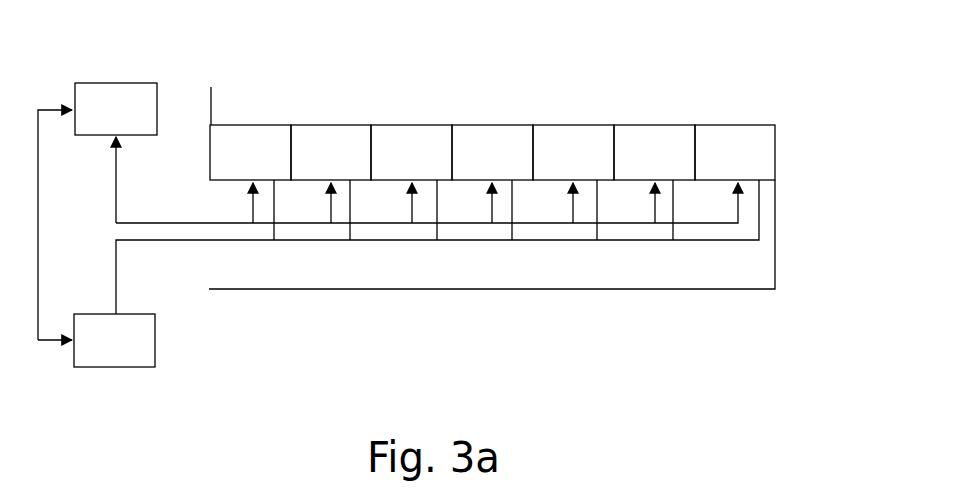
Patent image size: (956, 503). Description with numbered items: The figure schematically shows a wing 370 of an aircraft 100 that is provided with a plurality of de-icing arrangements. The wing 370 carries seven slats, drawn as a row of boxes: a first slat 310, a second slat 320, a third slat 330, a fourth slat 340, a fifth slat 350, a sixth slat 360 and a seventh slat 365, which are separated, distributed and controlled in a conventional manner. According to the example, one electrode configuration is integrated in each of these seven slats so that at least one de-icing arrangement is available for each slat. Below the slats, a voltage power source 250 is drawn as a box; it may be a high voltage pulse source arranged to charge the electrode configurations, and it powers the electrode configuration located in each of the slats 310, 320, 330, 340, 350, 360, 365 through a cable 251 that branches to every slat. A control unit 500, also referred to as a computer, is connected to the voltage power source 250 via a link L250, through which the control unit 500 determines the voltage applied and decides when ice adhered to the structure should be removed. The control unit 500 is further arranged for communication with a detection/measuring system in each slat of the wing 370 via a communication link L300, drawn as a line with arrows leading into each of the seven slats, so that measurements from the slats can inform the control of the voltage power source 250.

The aircraft 100 is at (506, 56).
The control unit 500 is at (116, 109).
The voltage power source 250 is at (114, 340).
The link L250 is at (72, 208).
The communication link L300 is at (427, 180).
The cable 251 is at (116, 280).
The wing 370 is at (615, 289).
The first slat 310 is at (250, 152).
The second slat 320 is at (331, 152).
The third slat 330 is at (411, 152).
The fourth slat 340 is at (492, 152).
The fifth slat 350 is at (573, 152).
The sixth slat 360 is at (654, 152).
The seventh slat 365 is at (735, 152).